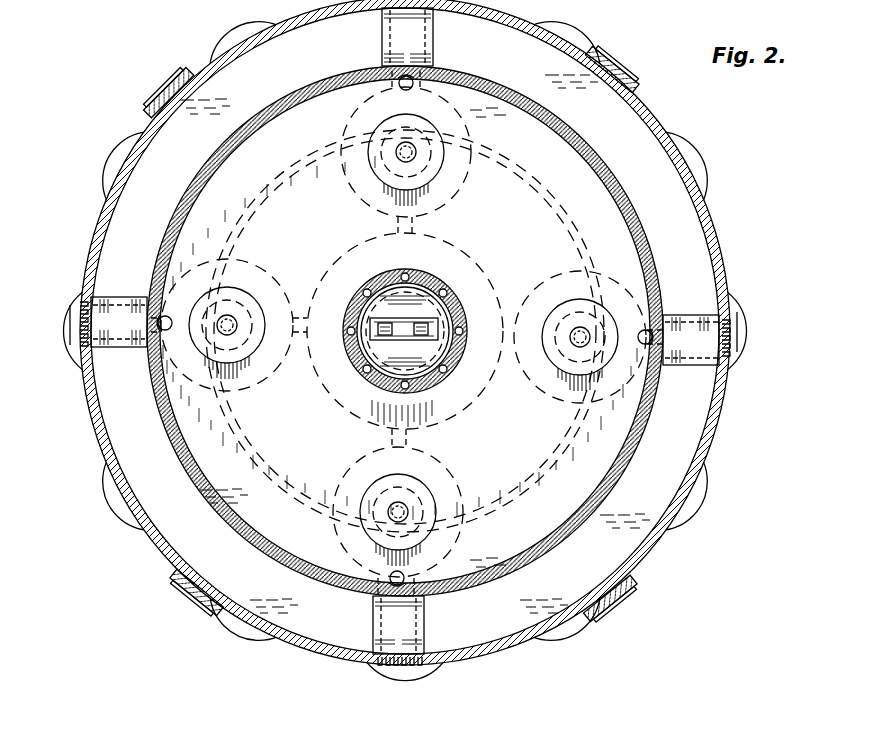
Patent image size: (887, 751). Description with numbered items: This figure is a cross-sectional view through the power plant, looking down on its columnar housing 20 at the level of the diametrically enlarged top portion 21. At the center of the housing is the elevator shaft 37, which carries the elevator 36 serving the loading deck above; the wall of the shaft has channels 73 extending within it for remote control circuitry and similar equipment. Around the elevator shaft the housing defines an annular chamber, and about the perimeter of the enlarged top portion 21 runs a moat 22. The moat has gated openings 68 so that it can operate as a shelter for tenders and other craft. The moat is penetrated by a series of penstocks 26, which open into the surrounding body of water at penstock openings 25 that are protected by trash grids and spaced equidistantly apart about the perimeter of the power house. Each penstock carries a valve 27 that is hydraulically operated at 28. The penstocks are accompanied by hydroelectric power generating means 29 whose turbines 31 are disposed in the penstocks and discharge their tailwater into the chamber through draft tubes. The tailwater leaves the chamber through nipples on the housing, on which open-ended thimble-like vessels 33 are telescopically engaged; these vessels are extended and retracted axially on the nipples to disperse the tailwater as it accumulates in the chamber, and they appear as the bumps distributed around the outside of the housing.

The columnar housing 20 is at (730, 235).
The diametrically enlarged top portion 21 is at (714, 447).
The moat 22 is at (313, 64).
The penstock openings 25 is at (78, 324).
The penstocks 26 is at (122, 337).
The valves 27 is at (418, 62).
The hydraulic operating means 28 is at (414, 88).
The hydroelectric power generating means 29 is at (440, 146).
The turbines 31 is at (350, 142).
The thimble-like vessels 33 is at (705, 173).
The elevator 36 is at (428, 296).
The elevator shaft 37 is at (365, 367).
The gated openings 68 is at (189, 82).
The channels 73 is at (376, 294).